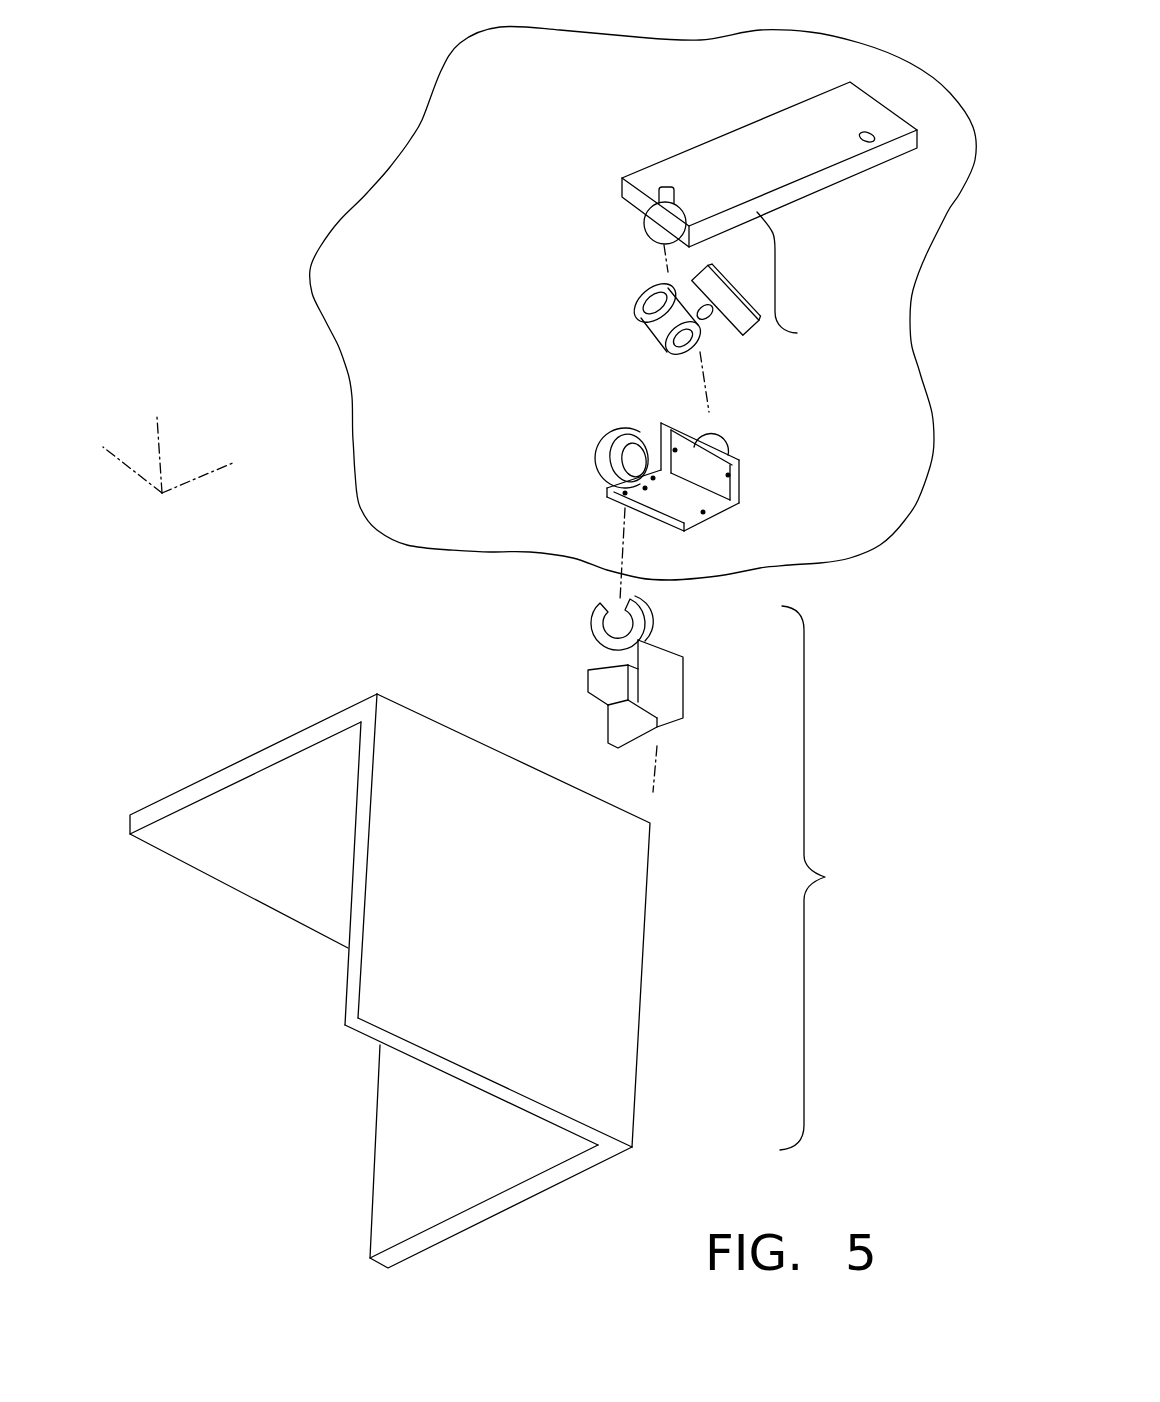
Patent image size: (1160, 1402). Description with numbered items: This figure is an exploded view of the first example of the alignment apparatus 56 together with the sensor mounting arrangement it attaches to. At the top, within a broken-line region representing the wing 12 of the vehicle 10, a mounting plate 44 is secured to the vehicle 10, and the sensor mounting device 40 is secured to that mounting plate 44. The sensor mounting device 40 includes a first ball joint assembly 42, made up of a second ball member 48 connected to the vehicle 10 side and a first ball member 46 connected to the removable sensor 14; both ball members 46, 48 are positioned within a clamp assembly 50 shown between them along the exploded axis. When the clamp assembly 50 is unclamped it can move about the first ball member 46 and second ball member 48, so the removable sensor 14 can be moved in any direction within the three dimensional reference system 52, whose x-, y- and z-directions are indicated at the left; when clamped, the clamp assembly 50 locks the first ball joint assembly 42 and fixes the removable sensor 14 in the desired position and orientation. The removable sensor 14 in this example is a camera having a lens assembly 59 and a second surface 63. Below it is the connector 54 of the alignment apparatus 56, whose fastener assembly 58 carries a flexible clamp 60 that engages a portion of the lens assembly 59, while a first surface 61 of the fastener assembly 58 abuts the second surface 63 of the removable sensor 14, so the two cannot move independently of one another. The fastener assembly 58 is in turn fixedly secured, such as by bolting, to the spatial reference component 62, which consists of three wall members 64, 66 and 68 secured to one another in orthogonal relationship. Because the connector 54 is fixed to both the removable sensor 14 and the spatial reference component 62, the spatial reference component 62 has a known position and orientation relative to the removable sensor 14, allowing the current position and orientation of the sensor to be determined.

The vehicle 10 is at (712, 73).
The wing 12 is at (537, 112).
The removable sensor 14 is at (703, 472).
The sensor mounting device 40 is at (577, 313).
The first ball joint assembly 42 is at (798, 333).
The mounting plate 44 is at (787, 143).
The first ball member 46 is at (705, 430).
The second ball member 48 is at (663, 223).
The clamp assembly 50 is at (627, 298).
The three dimensional reference system 52 is at (190, 412).
The connector 54 is at (646, 686).
The alignment apparatus 56 is at (825, 877).
The fastener assembly 58 is at (677, 712).
The lens assembly 59 is at (652, 423).
The flexible clamp 60 is at (590, 638).
The first surface 61 is at (670, 652).
The spatial reference component 62 is at (399, 981).
The second surface 63 is at (680, 507).
The wall member 64 is at (470, 1187).
The wall member 66 is at (603, 962).
The wall member 68 is at (283, 786).